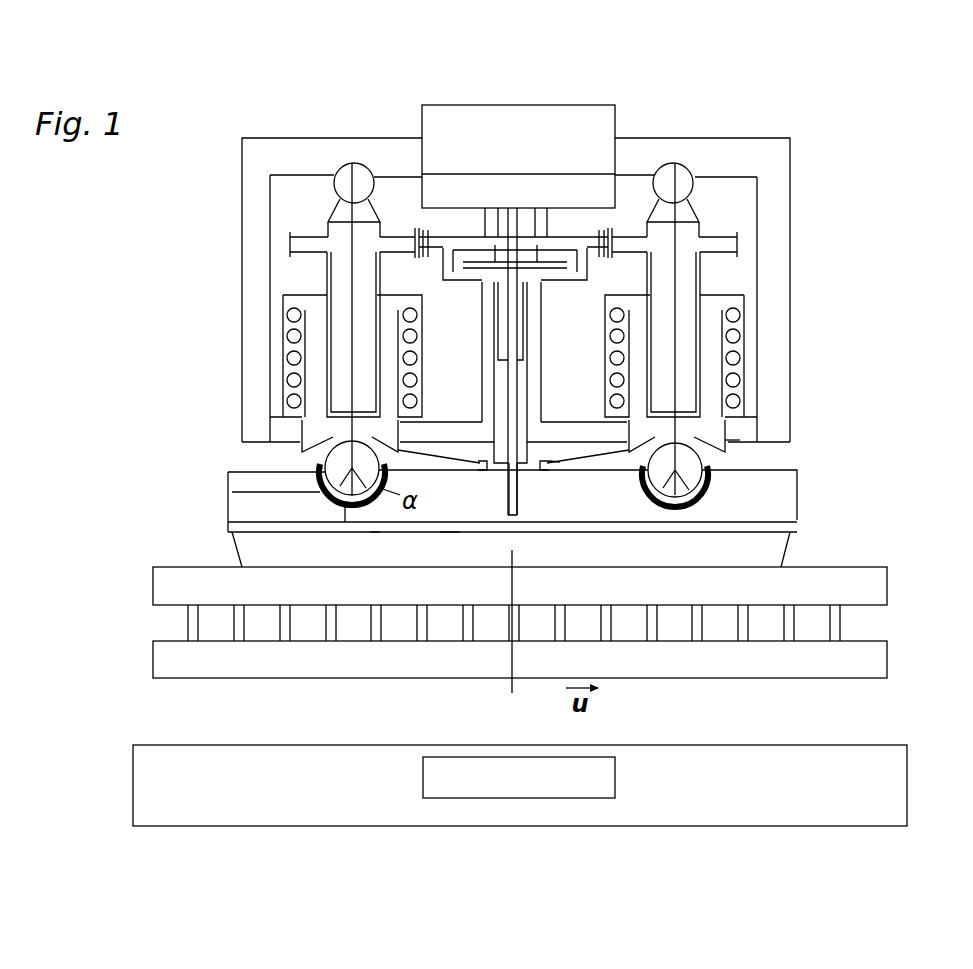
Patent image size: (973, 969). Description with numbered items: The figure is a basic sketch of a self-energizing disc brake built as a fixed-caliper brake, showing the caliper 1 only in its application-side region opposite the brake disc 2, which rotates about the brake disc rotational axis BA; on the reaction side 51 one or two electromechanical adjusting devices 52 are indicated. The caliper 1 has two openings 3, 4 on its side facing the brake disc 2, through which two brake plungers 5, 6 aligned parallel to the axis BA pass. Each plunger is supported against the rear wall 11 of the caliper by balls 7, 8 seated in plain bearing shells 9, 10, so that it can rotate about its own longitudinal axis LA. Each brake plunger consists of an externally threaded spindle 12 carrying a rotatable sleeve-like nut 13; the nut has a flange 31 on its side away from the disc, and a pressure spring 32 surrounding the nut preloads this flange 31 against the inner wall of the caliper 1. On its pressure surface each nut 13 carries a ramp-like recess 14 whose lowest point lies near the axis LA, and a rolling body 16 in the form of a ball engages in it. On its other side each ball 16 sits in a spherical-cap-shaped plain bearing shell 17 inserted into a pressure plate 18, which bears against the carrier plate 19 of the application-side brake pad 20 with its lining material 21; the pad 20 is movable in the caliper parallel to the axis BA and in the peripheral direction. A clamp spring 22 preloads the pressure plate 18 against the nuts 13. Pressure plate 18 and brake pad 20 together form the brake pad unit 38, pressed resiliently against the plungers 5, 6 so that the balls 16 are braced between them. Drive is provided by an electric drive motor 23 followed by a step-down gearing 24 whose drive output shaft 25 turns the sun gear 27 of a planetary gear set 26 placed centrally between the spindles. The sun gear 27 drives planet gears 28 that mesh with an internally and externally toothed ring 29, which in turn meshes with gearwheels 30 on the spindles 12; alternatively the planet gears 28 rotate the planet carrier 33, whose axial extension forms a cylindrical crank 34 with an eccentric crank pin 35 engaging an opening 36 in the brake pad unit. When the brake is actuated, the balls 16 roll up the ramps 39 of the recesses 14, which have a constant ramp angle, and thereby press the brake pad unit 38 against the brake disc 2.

The caliper 1 is at (270, 155).
The brake disc 2 is at (258, 660).
The opening 3 is at (290, 430).
The opening 4 is at (730, 430).
The brake plunger 5 is at (276, 294).
The brake plunger 6 is at (725, 292).
The ball 7 is at (355, 181).
The ball 8 is at (677, 173).
The plain bearing shell 9 is at (369, 163).
The plain bearing shell 10 is at (712, 152).
The rear wall 11 is at (725, 160).
The spindle 12 is at (343, 258).
The nut 13 is at (318, 375).
The ramp-like recess 14 is at (729, 436).
The rolling body 16 is at (326, 461).
The plain bearing shell 17 is at (345, 509).
The pressure plate 18 is at (435, 497).
The carrier plate 19 is at (374, 537).
The brake pad 20 is at (797, 520).
The brake pad lining material 21 is at (450, 550).
The clamp spring 22 is at (578, 463).
The electric drive motor 23 is at (553, 128).
The step-down gearing 24 is at (563, 198).
The drive output shaft 25 is at (522, 243).
The planetary gear set 26 is at (577, 236).
The sun gear 27 is at (508, 243).
The planet gear 28 is at (472, 278).
The ring 29 is at (435, 240).
The gearwheel 30 is at (305, 240).
The flange 31 is at (750, 288).
The pressure spring 32 is at (737, 348).
The planet carrier 33 is at (522, 287).
The crank 34 is at (732, 441).
The crank pin 35 is at (528, 505).
The opening 36 is at (530, 487).
The brake pad unit 38 is at (221, 516).
The ramp 39 is at (290, 442).
The reaction side 51 is at (765, 745).
The electromechanical adjusting device 52 is at (483, 747).
The longitudinal axis LA is at (330, 492).
The brake disc rotational axis BA is at (503, 636).